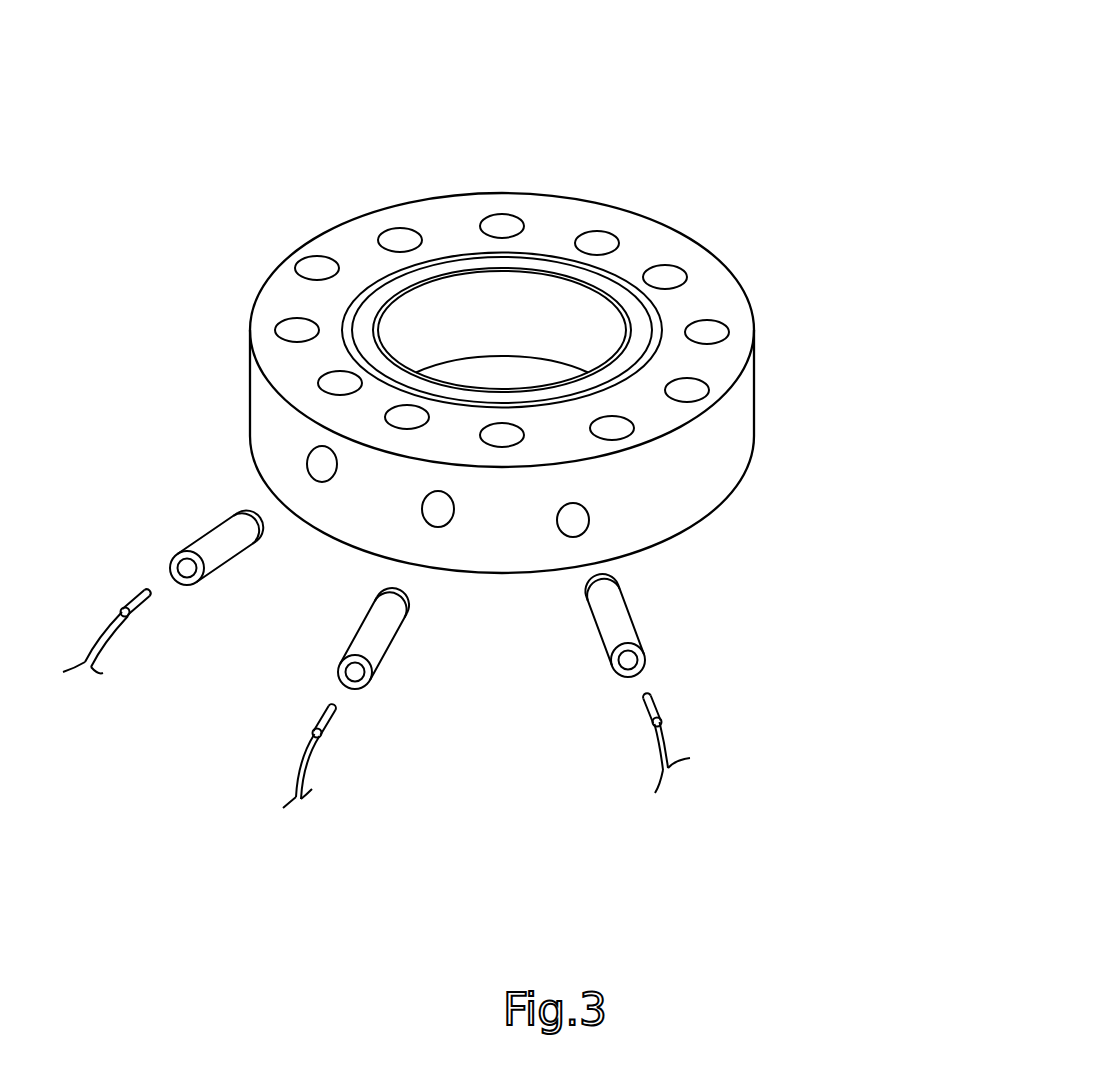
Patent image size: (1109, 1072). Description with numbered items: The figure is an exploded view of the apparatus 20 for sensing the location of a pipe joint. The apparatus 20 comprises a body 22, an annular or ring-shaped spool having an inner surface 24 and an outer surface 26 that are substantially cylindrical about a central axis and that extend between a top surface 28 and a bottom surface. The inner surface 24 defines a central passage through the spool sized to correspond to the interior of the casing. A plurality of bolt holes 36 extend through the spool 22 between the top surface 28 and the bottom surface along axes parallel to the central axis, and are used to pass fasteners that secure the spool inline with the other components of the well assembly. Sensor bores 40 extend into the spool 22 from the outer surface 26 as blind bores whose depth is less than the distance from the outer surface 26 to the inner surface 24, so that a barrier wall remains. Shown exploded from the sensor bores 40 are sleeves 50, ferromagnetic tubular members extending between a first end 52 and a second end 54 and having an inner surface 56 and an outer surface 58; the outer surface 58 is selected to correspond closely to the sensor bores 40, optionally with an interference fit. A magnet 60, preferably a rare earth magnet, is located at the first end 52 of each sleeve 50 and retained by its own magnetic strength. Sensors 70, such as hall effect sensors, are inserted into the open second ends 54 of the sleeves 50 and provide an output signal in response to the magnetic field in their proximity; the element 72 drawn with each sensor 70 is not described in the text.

The apparatus 20 is at (594, 163).
The body 22 is at (733, 297).
The inner surface 24 is at (457, 291).
The outer surface 26 is at (717, 448).
The top surface 28 is at (643, 254).
The bolt holes 36 is at (393, 228).
The sensor bores 40 is at (308, 452).
The sleeves 50 is at (424, 585).
The first end 52 is at (258, 527).
The second end 54 is at (184, 585).
The inner surface 56 is at (178, 567).
The outer surface 58 is at (227, 543).
The magnet 60 is at (245, 513).
The sensors 70 is at (140, 607).
The cable 72 is at (95, 643).